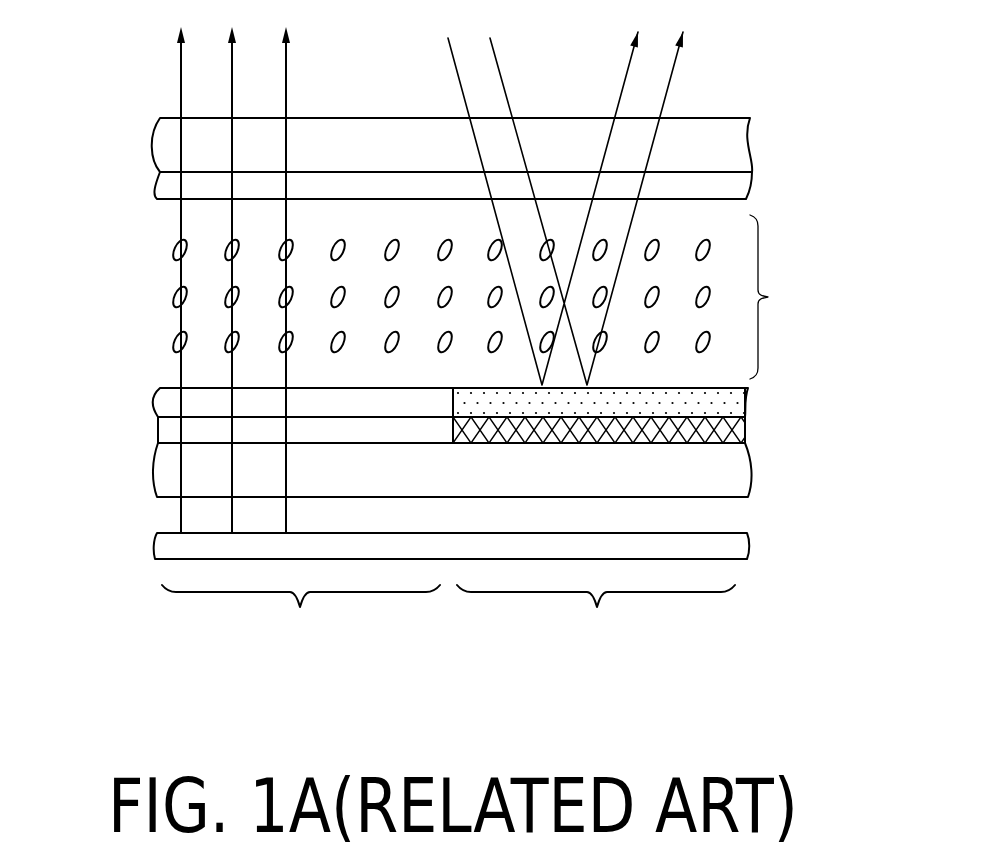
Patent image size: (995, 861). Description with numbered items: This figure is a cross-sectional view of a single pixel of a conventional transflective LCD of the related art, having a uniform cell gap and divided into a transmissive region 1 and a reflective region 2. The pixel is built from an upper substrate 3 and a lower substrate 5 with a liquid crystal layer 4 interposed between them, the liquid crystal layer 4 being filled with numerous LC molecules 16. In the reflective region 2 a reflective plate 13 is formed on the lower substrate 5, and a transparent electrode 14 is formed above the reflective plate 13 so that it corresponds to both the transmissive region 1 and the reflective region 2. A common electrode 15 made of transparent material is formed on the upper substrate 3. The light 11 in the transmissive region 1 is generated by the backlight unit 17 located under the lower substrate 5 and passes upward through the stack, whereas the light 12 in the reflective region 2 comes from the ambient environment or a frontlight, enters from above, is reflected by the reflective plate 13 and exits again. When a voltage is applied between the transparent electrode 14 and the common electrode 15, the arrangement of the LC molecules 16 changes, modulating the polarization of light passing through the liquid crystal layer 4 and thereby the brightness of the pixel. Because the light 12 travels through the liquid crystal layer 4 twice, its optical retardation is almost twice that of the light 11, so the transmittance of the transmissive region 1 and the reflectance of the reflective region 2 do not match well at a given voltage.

The transmissive region 1 is at (301, 348).
The reflective region 2 is at (596, 627).
The upper substrate 3 is at (738, 143).
The liquid crystal layer 4 is at (777, 297).
The lower substrate 5 is at (725, 482).
The light 11 is at (287, 265).
The light 12 is at (505, 228).
The reflective plate 13 is at (727, 428).
The transparent electrode 14 is at (727, 402).
The common electrode 15 is at (727, 187).
The LC molecules 16 is at (173, 250).
The backlight unit 17 is at (725, 547).